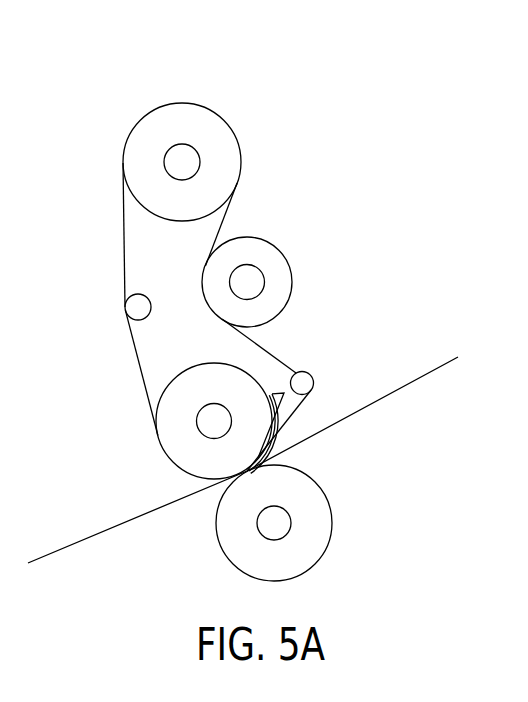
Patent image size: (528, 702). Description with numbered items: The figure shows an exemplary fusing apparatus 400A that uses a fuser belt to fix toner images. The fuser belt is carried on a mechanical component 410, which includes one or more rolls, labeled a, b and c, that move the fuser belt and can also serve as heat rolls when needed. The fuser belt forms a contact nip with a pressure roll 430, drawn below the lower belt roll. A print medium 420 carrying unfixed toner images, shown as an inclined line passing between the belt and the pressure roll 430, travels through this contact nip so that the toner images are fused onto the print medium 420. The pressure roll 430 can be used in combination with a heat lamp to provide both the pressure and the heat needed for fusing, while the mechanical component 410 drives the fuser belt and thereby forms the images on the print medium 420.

The fusing apparatus 400A is at (264, 86).
The mechanical component 410 is at (241, 220).
The print medium 420 is at (431, 378).
The pressure roll 430 is at (332, 500).